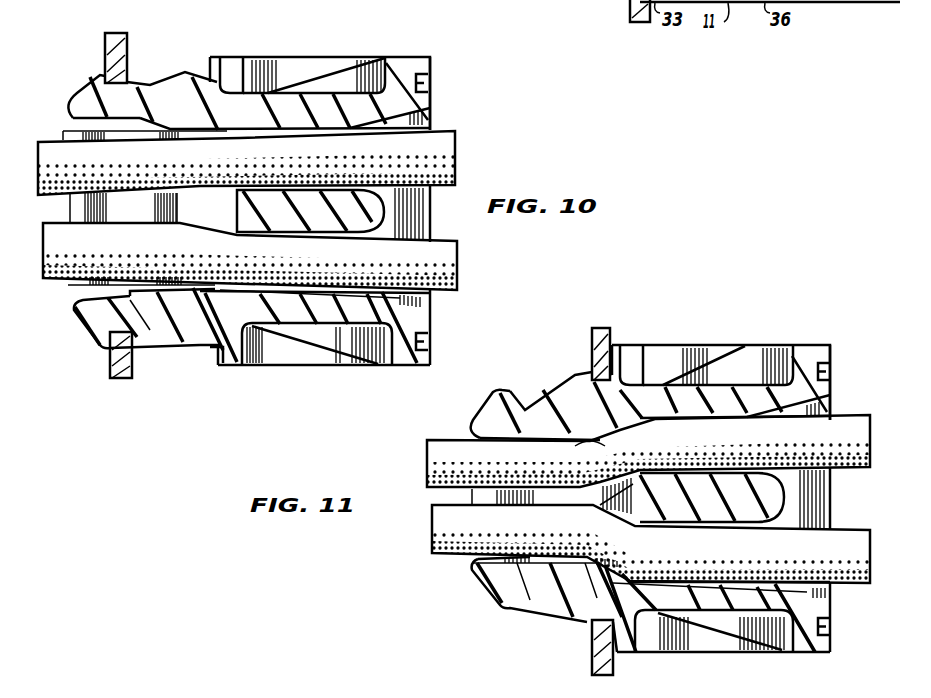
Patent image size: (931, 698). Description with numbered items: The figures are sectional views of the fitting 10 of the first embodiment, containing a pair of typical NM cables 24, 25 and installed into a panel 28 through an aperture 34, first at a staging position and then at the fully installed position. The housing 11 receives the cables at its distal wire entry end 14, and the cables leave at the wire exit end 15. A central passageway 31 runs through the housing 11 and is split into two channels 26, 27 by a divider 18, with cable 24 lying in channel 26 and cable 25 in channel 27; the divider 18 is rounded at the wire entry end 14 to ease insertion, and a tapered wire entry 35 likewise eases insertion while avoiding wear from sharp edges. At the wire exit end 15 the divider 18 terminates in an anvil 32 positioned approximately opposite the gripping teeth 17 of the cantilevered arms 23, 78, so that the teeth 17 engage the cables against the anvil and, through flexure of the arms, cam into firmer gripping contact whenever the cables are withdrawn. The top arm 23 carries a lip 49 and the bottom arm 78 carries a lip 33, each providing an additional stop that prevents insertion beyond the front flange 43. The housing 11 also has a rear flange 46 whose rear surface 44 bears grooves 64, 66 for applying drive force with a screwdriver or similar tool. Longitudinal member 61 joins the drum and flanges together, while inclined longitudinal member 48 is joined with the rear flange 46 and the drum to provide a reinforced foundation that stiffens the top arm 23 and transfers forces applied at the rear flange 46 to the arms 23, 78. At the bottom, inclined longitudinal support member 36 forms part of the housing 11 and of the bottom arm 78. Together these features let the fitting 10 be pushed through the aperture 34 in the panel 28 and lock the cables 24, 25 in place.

In FIG. 10, the fitting 10 is at (185, 40).
In FIG. 11, the fitting 10 is at (458, 641).
In FIG. 10, the housing 11 is at (283, 366).
In FIG. 11, the housing 11 is at (717, 608).
In FIG. 10, the distal wire entry end 14 is at (493, 235).
In FIG. 10, the wire exit end 15 is at (70, 328).
In FIG. 11, the wire exit end 15 is at (479, 610).
In FIG. 10, the gripping teeth 17 is at (181, 128).
In FIG. 11, the gripping teeth 17 is at (582, 453).
In FIG. 10, the divider 18 is at (322, 222).
In FIG. 11, the divider 18 is at (692, 525).
In FIG. 10, the arm 23 is at (72, 105).
In FIG. 11, the arm 23 is at (472, 428).
In FIG. 10, the cable 24 is at (455, 150).
In FIG. 11, the cable 24 is at (432, 458).
In FIG. 10, the cable 25 is at (458, 252).
In FIG. 11, the cable 25 is at (432, 530).
In FIG. 10, the channel 26 is at (438, 114).
In FIG. 11, the channel 26 is at (843, 402).
In FIG. 10, the channel 27 is at (439, 299).
In FIG. 11, the channel 27 is at (790, 522).
In FIG. 10, the panel 28 is at (100, 56).
In FIG. 11, the panel 28 is at (588, 352).
In FIG. 10, the central passageway 31 is at (398, 212).
In FIG. 11, the central passageway 31 is at (804, 492).
In FIG. 10, the anvil 32 is at (232, 200).
In FIG. 11, the anvil 32 is at (627, 519).
In FIG. 10, the lip 33 is at (242, 366).
In FIG. 11, the lip 33 is at (628, 652).
In FIG. 11, the aperture 34 is at (590, 624).
In FIG. 10, the tapered wire entry 35 is at (433, 321).
In FIG. 11, the tapered wire entry 35 is at (832, 597).
In FIG. 10, the bottom inclined longitudinal support member 36 is at (350, 366).
In FIG. 11, the bottom inclined longitudinal support member 36 is at (750, 650).
In FIG. 10, the front flange 43 is at (211, 358).
In FIG. 10, the rear surface of rear flange 44 is at (432, 70).
In FIG. 11, the rear surface of rear flange 44 is at (832, 352).
In FIG. 10, the rear flange 46 is at (413, 57).
In FIG. 11, the rear flange 46 is at (810, 346).
In FIG. 10, the inclined longitudinal member 48 is at (344, 73).
In FIG. 11, the inclined longitudinal member 48 is at (745, 372).
In FIG. 10, the lip 49 is at (231, 62).
In FIG. 11, the lip 49 is at (631, 358).
In FIG. 10, the longitudinal member 61 is at (278, 62).
In FIG. 11, the longitudinal member 61 is at (660, 360).
In FIG. 10, the groove 64 is at (432, 88).
In FIG. 11, the groove 64 is at (833, 366).
In FIG. 10, the groove 66 is at (432, 345).
In FIG. 11, the groove 66 is at (833, 626).
In FIG. 10, the arm 78 is at (75, 305).
In FIG. 11, the arm 78 is at (472, 577).